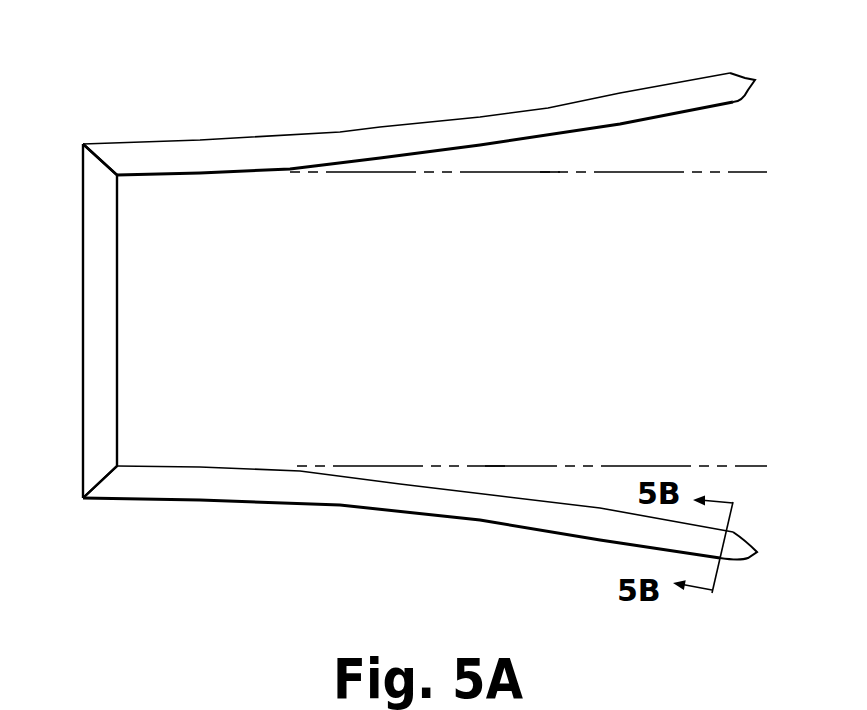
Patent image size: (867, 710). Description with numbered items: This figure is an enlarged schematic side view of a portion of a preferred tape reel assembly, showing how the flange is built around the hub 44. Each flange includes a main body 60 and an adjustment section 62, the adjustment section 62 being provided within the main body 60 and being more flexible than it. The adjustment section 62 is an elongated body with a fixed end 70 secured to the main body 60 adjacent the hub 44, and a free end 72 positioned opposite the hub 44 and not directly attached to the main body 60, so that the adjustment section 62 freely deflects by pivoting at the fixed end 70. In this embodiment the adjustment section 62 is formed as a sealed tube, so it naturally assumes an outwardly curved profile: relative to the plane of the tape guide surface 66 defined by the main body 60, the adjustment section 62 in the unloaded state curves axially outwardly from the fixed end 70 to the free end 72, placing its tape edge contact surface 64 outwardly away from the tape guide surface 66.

The hub 44 is at (82, 340).
The main body 60 is at (542, 181).
The adjustment section 62 is at (547, 102).
The tape edge contact surface 64 is at (652, 121).
The tape guide surface 66 is at (438, 176).
The fixed end 70 is at (101, 150).
The free end 72 is at (735, 90).